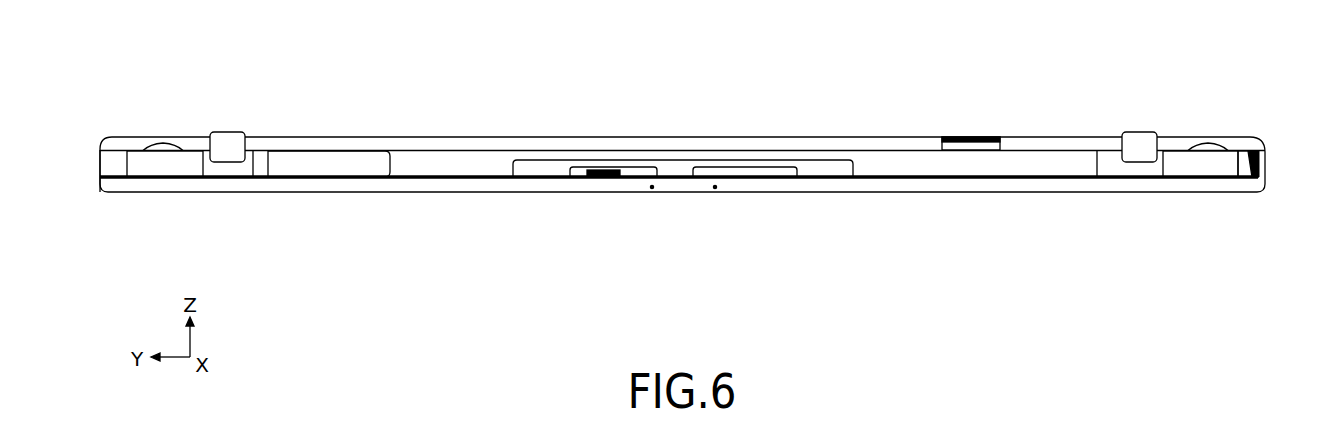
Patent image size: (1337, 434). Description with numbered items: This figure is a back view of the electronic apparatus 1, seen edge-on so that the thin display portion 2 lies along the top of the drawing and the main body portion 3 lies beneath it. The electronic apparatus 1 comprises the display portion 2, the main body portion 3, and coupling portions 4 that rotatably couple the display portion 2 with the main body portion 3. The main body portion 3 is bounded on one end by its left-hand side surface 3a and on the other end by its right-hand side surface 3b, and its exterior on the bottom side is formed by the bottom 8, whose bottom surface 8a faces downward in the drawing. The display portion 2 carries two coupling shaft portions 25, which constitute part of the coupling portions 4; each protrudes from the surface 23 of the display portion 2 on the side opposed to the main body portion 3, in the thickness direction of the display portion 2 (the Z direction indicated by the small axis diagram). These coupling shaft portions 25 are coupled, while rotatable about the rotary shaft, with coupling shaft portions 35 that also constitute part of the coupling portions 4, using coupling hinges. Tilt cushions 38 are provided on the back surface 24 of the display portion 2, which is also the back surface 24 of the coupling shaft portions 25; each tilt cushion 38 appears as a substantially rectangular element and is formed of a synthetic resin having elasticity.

The electronic apparatus 1 is at (686, 147).
The display portion 2 is at (122, 137).
The main body portion 3 is at (686, 198).
The left-hand side surface 3a is at (1258, 164).
The right-hand side surface 3b is at (100, 190).
The coupling portion 4 is at (682, 165).
The coupling shaft portion 25 is at (260, 162).
The coupling shaft portion 35 is at (682, 165).
The bottom 8 is at (683, 218).
The bottom surface 8a is at (816, 192).
The surface 23 is at (378, 178).
The back surface 24 is at (232, 165).
The tilt cushion 38 is at (219, 138).